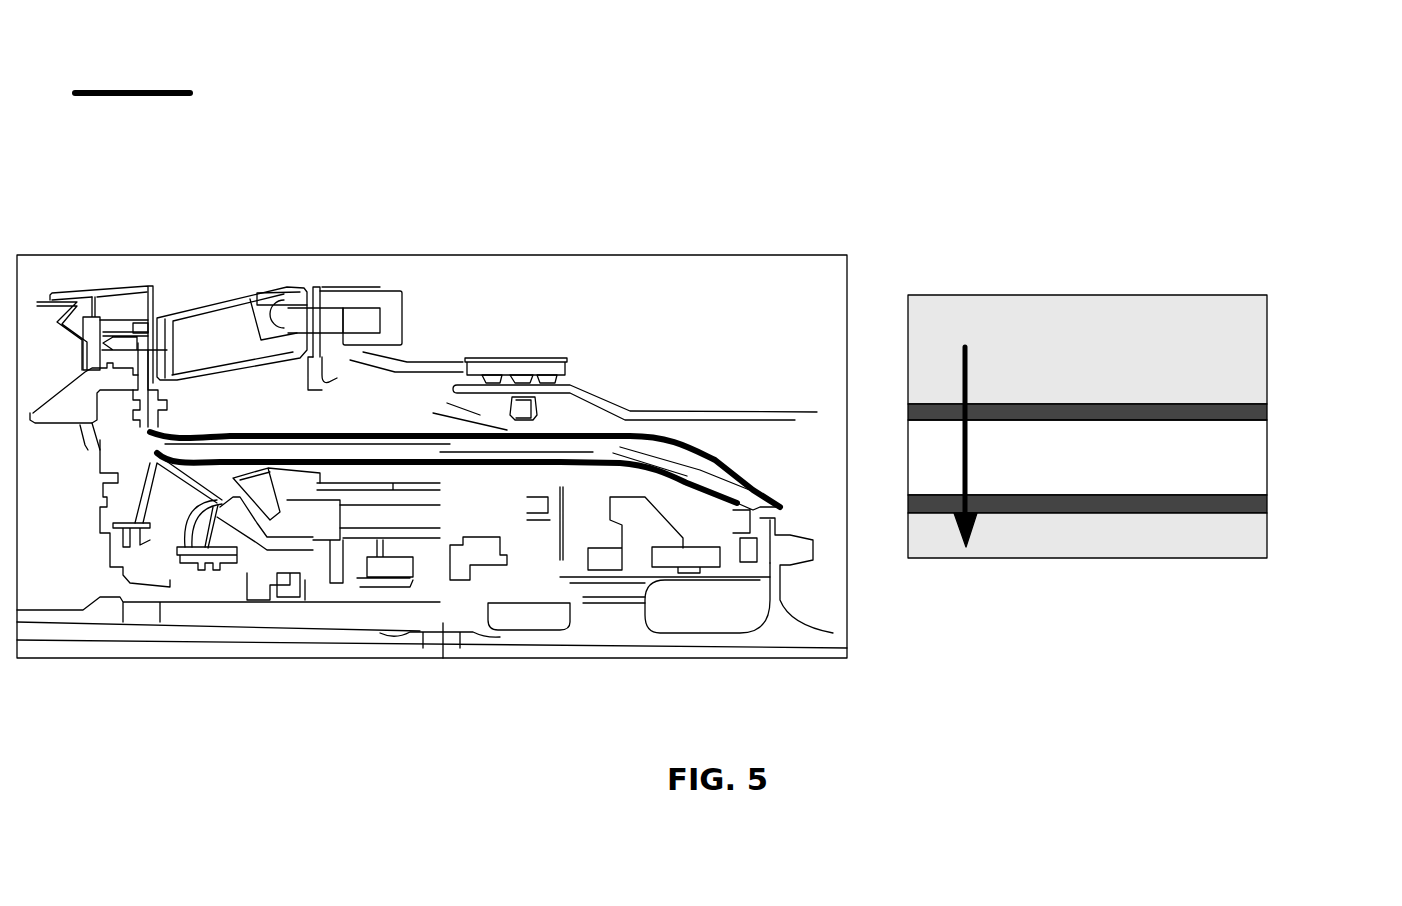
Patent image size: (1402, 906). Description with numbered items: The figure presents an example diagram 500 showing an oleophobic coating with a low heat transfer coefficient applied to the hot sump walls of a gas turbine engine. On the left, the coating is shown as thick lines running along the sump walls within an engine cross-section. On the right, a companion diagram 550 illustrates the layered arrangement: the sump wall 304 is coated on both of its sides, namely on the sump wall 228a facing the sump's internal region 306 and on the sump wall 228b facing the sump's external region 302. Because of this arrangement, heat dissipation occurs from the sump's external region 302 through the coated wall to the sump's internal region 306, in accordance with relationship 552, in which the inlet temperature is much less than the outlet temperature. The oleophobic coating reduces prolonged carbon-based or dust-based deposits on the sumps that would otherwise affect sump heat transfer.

The diagram 500 is at (692, 212).
The diagram 550 is at (1150, 353).
The relationship 552 is at (1196, 200).
The sump's external region 302 is at (1258, 338).
The sump wall facing external region 228b is at (1245, 402).
The sump wall 304 is at (1253, 455).
The sump wall facing internal region 228a is at (1245, 493).
The sump's internal region 306 is at (1253, 535).